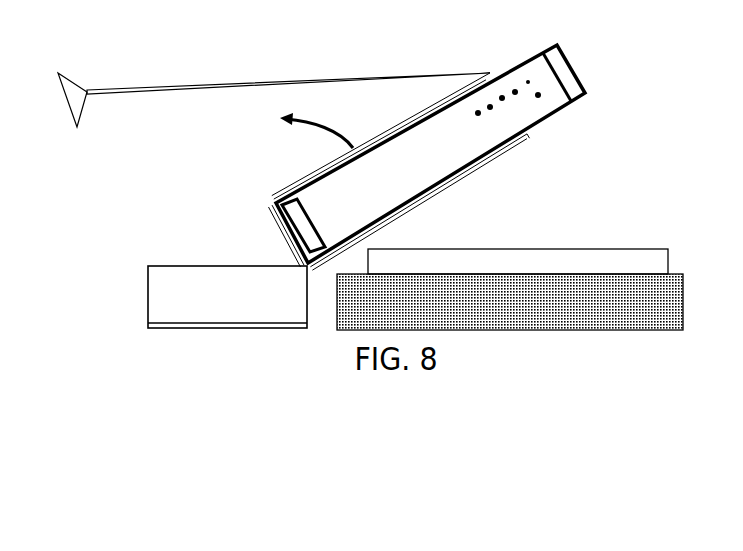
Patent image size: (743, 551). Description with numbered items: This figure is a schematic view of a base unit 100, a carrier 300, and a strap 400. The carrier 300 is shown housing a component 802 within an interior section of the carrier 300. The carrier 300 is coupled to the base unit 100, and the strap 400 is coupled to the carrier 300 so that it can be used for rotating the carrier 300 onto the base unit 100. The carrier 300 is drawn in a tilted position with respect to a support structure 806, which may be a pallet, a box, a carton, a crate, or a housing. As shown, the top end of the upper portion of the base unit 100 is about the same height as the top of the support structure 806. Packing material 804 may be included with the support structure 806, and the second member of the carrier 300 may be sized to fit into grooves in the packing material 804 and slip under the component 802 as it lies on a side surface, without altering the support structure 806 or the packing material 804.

The base unit 100 is at (162, 246).
The carrier 300 is at (483, 172).
The strap 400 is at (300, 71).
The component 802 is at (556, 103).
The packing material 804 is at (618, 262).
The support structure 806 is at (660, 306).